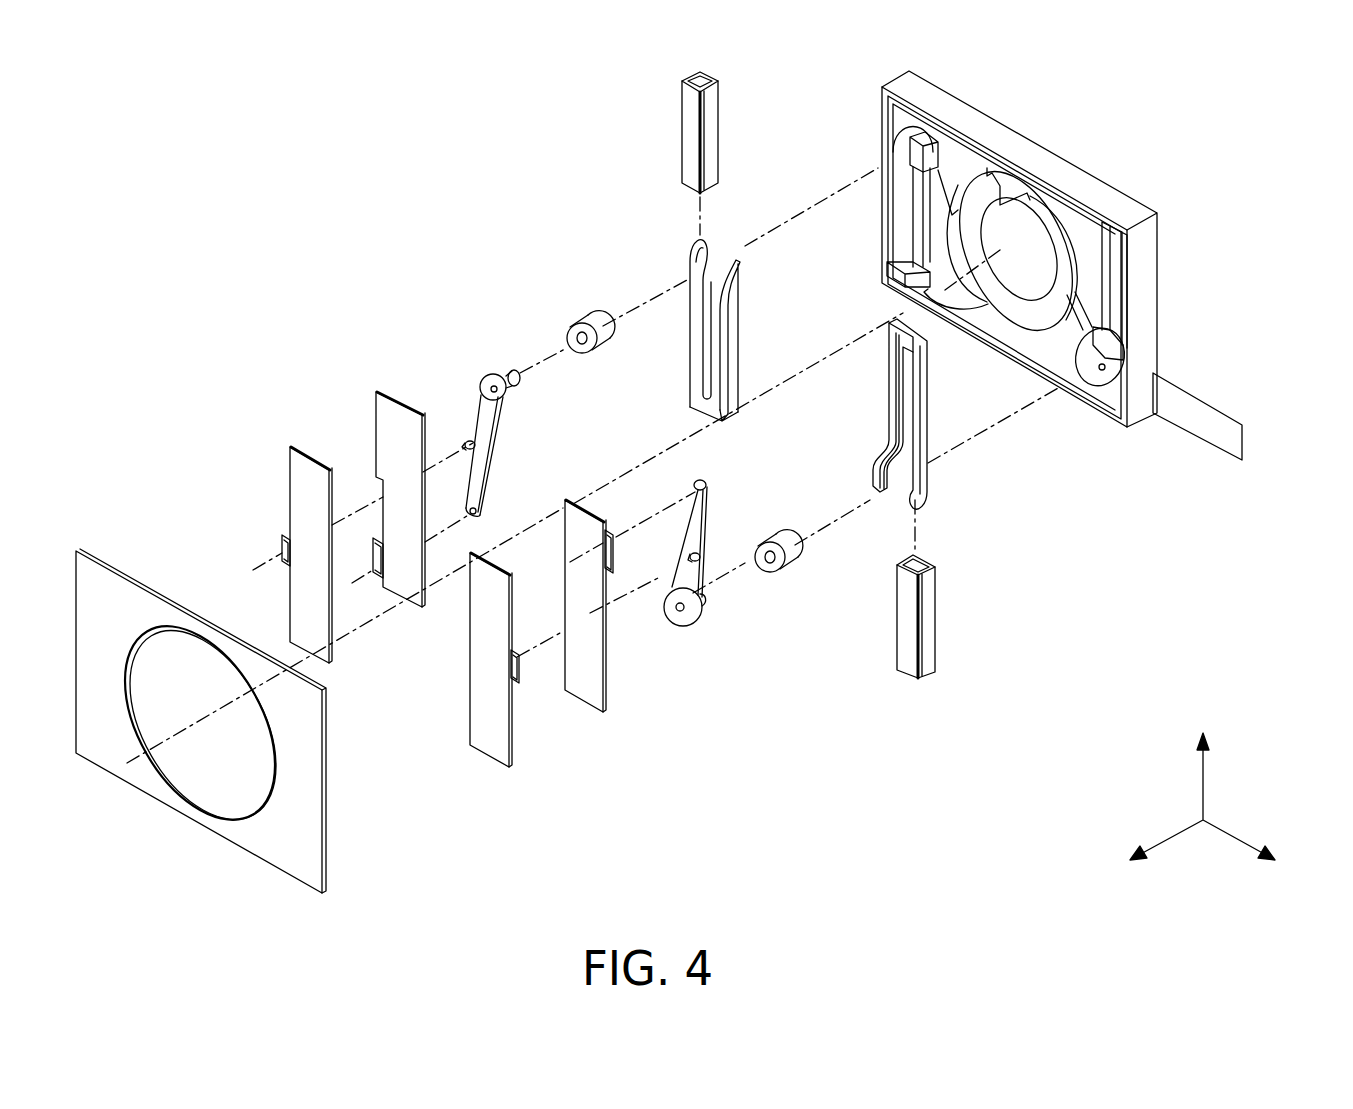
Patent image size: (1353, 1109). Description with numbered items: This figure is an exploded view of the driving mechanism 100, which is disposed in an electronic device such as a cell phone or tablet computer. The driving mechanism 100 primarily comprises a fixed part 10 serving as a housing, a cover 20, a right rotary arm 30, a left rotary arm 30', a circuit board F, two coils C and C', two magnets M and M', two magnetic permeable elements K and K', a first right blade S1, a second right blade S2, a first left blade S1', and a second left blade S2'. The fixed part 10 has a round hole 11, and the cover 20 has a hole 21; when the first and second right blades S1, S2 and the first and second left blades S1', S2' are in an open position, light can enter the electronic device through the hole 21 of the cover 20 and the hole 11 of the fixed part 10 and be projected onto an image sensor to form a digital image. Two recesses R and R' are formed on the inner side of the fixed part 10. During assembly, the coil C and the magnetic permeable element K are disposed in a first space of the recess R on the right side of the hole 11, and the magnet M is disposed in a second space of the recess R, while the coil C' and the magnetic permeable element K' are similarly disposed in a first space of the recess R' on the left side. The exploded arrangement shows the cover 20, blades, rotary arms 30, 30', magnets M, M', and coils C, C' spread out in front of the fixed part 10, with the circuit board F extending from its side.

The driving mechanism 100 is at (1229, 138).
The fixed part 10 is at (1145, 265).
The round hole 11 is at (1022, 228).
The cover 20 is at (311, 786).
The hole 21 is at (178, 772).
The right rotary arm 30 is at (717, 579).
The left rotary arm 30' is at (461, 417).
The first right blade S1 is at (619, 619).
The second right blade S2 is at (524, 668).
The first left blade S1' is at (359, 496).
The second left blade S2' is at (270, 550).
The magnet M is at (806, 579).
The magnet M' is at (561, 307).
The magnetic permeable element K is at (928, 431).
The magnetic permeable element K' is at (676, 313).
The coil C is at (942, 617).
The coil C' is at (665, 132).
The recess R is at (1154, 291).
The recess R' is at (879, 207).
The circuit board F is at (1210, 405).